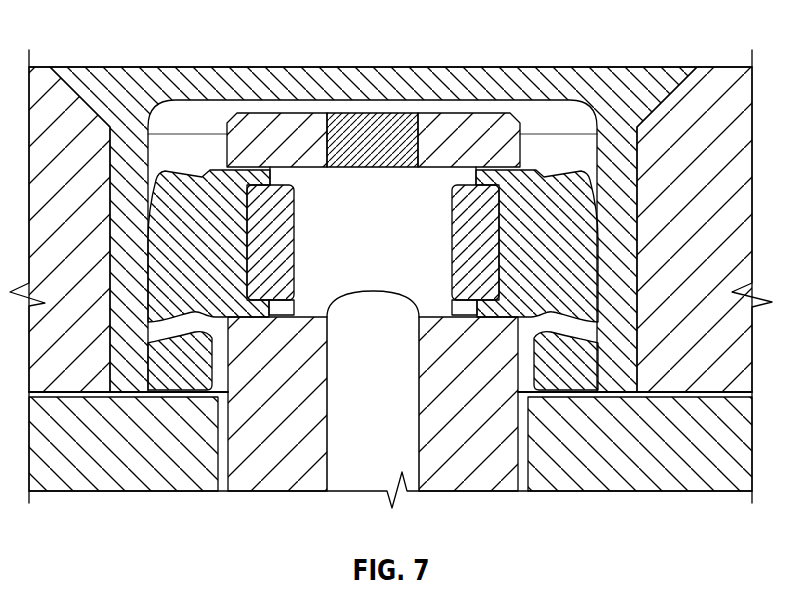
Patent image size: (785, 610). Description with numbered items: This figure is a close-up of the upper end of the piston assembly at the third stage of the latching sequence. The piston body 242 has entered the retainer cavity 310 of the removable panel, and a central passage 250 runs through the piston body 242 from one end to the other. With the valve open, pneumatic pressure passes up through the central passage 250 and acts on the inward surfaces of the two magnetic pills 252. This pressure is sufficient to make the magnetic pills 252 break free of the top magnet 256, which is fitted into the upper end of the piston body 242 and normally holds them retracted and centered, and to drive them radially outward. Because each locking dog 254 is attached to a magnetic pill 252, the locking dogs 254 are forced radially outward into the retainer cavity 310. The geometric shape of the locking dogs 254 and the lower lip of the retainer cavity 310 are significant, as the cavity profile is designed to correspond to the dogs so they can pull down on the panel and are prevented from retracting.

The piston body 242 is at (470, 484).
The central passage 250 is at (343, 484).
The magnetic pills 252 is at (287, 276).
The locking dogs 254 is at (176, 196).
The top magnet 256 is at (380, 158).
The retainer cavity 310 is at (622, 78).